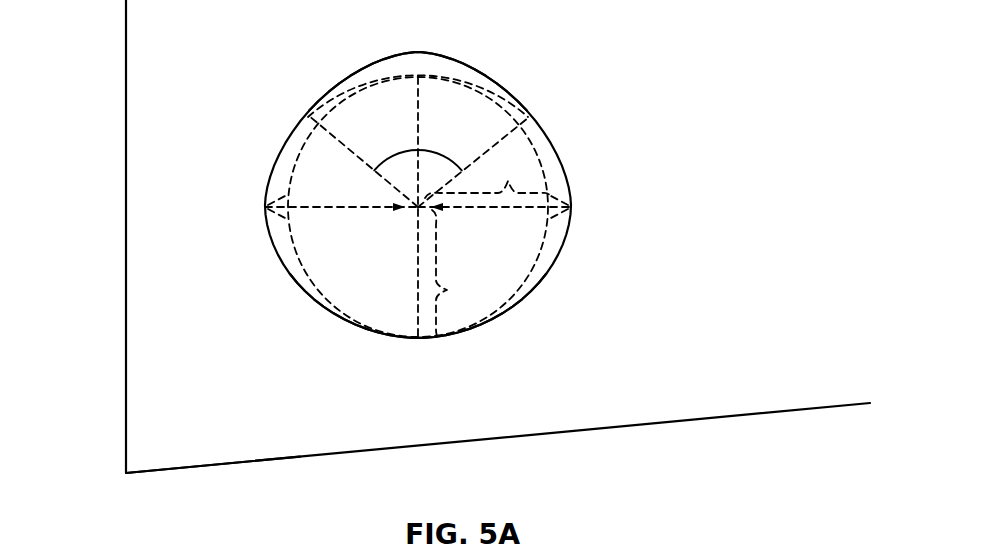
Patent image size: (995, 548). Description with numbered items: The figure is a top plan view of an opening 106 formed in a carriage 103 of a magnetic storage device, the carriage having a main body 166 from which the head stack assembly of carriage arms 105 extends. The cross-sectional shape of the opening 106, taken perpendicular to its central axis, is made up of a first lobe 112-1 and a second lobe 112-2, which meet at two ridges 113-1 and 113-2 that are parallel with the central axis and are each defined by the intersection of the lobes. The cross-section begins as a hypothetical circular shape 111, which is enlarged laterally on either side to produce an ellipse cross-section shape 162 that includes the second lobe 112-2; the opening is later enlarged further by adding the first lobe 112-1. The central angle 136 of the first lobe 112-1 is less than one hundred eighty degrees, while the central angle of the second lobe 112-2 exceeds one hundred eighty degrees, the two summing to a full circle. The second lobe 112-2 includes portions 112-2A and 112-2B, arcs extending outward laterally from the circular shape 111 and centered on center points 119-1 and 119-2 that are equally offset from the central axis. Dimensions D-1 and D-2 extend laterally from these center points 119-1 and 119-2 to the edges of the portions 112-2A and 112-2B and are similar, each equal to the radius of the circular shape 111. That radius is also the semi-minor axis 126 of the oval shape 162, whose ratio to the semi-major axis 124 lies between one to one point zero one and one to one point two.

The carriage 103 is at (116, 196).
The carriage arm 105 is at (797, 370).
The main body 166 is at (250, 430).
The opening 106 is at (375, 269).
The hypothetical circular shape 111 is at (553, 148).
The first lobe 112-1 is at (467, 60).
The second lobe 112-2 is at (330, 317).
The portion of second lobe 112-2A is at (254, 209).
The portion of second lobe 112-2B is at (585, 203).
The ridge 113-1 is at (308, 115).
The ridge 113-2 is at (528, 118).
The center point 119-1 is at (399, 209).
The center point 119-2 is at (434, 215).
The semi-major axis 124 is at (488, 173).
The semi-minor axis 126 is at (448, 290).
The central angle 136 is at (436, 160).
The ellipse cross-section shape 162 is at (339, 96).
The dimension D-1 is at (333, 205).
The dimension D-2 is at (480, 210).